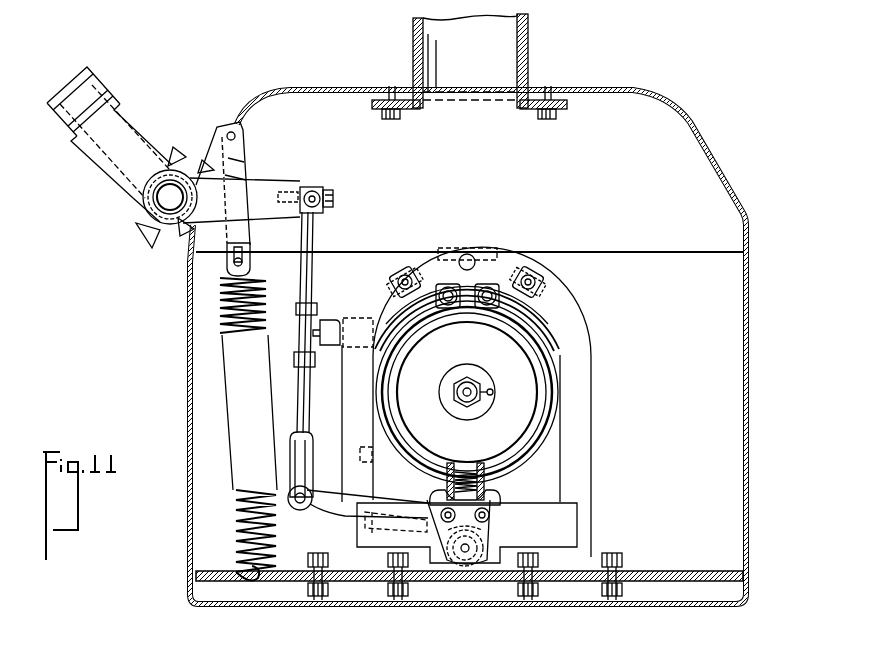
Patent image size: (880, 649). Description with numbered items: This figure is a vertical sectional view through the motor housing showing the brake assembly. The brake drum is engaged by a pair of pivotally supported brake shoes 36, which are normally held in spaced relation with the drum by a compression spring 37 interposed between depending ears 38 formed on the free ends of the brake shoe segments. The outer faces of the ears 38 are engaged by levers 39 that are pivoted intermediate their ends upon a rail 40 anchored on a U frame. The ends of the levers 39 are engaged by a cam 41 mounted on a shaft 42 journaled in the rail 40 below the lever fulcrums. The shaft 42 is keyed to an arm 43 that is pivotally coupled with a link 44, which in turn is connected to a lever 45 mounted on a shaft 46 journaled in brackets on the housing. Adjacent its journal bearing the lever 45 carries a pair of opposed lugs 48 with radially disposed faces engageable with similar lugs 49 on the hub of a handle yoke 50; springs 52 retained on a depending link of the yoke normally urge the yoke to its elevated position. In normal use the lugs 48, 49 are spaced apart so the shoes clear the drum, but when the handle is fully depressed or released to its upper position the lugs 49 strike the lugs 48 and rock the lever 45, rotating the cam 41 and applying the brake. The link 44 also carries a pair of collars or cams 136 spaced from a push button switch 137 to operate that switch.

The brake shoes 36 is at (502, 345).
The compression spring 37 is at (470, 494).
The depending ears 38 is at (483, 465).
The levers 39 is at (438, 493).
The rail 40 is at (575, 514).
The cam 41 is at (456, 565).
The shaft 42 is at (467, 556).
The arm 43 is at (328, 512).
The link 44 is at (316, 280).
The lever 45 is at (282, 184).
The shaft 46 is at (162, 200).
The lugs 48 is at (180, 230).
The lugs 49 is at (156, 227).
The handle yoke 50 is at (98, 158).
The springs 52 is at (240, 330).
The collars or cams 136 is at (296, 358).
The push button switch 137 is at (325, 346).